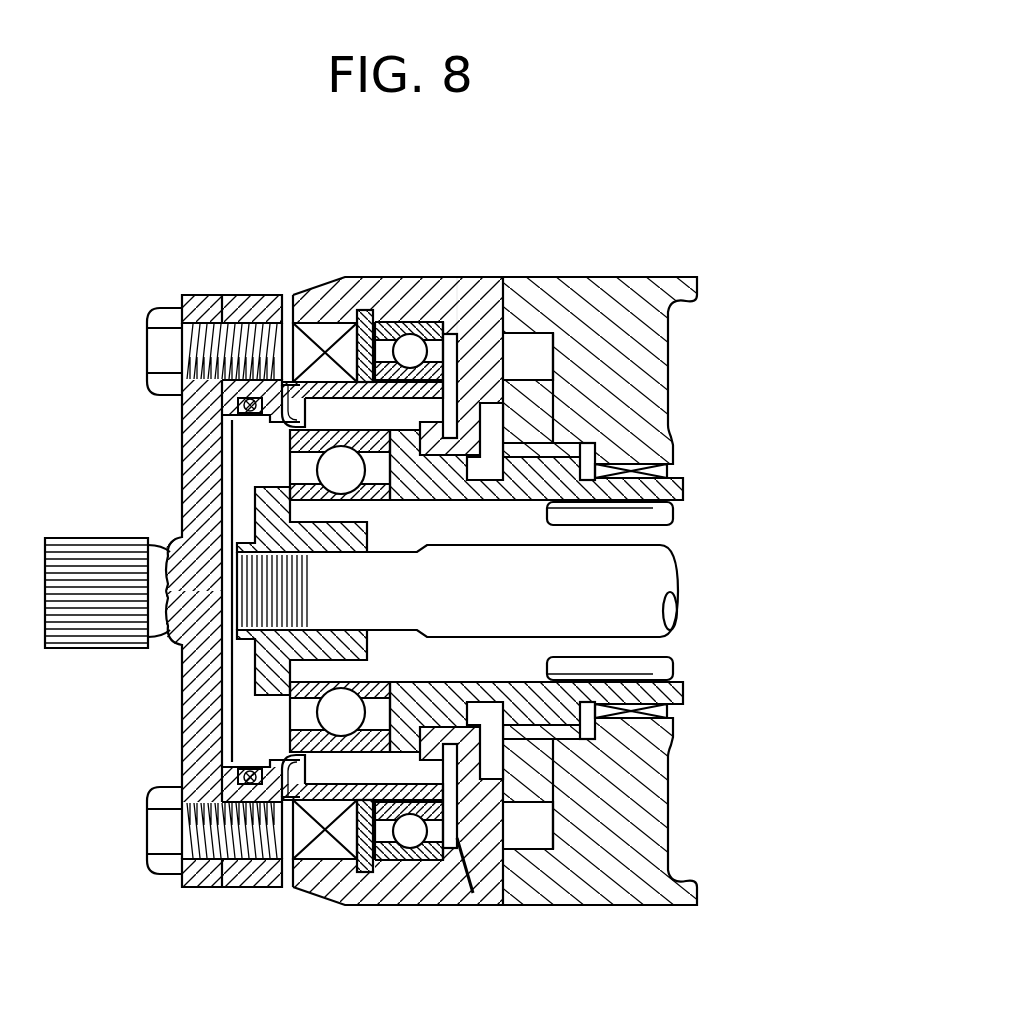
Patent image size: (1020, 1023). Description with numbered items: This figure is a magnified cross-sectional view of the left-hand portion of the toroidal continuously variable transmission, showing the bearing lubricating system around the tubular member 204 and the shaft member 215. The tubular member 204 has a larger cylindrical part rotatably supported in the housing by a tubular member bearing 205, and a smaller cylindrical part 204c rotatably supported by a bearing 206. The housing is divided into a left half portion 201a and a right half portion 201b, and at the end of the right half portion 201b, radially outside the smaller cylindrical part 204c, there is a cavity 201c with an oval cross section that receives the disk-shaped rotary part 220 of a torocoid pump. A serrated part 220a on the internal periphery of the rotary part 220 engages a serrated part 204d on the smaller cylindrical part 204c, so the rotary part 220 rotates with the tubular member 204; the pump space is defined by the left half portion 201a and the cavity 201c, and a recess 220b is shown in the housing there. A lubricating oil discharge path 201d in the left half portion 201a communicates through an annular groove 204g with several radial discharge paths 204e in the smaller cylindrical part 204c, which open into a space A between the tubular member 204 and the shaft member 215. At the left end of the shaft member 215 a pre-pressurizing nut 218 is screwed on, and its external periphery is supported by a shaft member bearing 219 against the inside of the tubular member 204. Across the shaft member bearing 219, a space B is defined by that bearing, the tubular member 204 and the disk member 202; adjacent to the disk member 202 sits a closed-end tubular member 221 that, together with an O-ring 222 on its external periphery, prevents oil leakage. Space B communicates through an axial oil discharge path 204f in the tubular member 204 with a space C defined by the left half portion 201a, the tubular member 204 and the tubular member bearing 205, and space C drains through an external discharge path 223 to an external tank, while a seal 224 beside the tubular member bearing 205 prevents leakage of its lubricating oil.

The O-ring 222 is at (227, 363).
The tubular member 204 is at (257, 303).
The seal 224 is at (313, 307).
The tubular member bearing 205 is at (406, 332).
The axial oil discharge path 204f is at (343, 405).
The left half portion of the housing 201a is at (438, 292).
The lubricating oil discharge path 201d is at (493, 330).
The cavity 201c is at (548, 312).
The right half portion of the housing 201b is at (628, 303).
The recess 220b is at (545, 340).
The rotary part 220 is at (547, 403).
The serrated part 220a is at (580, 437).
The bearing 206 is at (663, 471).
The shaft member 215 is at (667, 570).
The shaft member bearing 219 is at (378, 470).
The tubular member closed at an end 221 is at (227, 425).
The disk member 202 is at (198, 508).
The pre-pressurizing nut 218 is at (267, 678).
The discharge path 204e is at (487, 447).
The smaller cylindrical part 204c is at (547, 490).
The annular groove 204g is at (497, 462).
The serrated part 204d is at (545, 505).
The external discharge path 223 is at (473, 893).
The space A is at (440, 525).
The space B is at (247, 465).
The space C is at (449, 838).